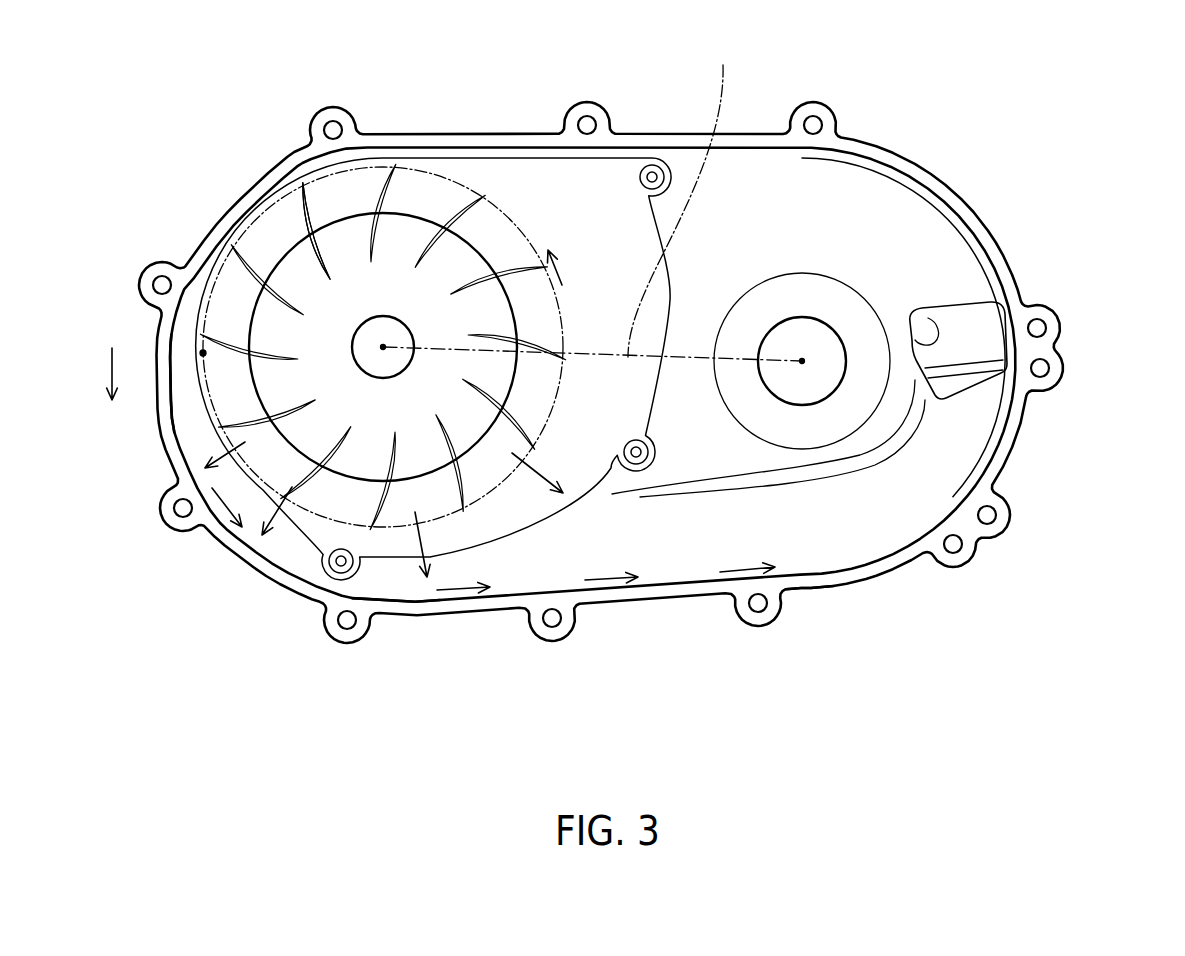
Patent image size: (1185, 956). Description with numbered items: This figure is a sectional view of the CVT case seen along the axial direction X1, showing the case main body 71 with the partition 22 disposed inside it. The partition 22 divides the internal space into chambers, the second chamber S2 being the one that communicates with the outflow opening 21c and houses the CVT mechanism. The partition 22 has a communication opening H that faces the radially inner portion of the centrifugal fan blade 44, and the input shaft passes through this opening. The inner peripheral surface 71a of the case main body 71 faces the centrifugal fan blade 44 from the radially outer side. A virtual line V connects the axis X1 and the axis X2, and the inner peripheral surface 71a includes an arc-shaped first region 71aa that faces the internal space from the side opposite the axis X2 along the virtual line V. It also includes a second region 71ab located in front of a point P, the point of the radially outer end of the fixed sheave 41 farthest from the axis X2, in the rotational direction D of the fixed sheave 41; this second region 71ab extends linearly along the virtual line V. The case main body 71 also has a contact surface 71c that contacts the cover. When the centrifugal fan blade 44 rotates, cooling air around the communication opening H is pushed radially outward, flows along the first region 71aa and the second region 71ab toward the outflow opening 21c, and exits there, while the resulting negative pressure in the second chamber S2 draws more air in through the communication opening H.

The case main body 71 is at (900, 147).
The inner peripheral surface 71a is at (672, 585).
The first region 71aa is at (183, 417).
The second region 71ab is at (403, 607).
The contact surface 71c is at (783, 587).
The partition 22 is at (612, 180).
The outflow opening 21c is at (987, 327).
The axis X2 is at (802, 361).
The axial direction X1 is at (382, 347).
The centrifugal fan blade 44 is at (427, 217).
The fixed sheave 41 is at (503, 190).
The communication opening H is at (303, 237).
The virtual line V is at (679, 192).
The point P is at (203, 353).
The rotational direction D is at (110, 373).
The second chamber S2 is at (540, 567).